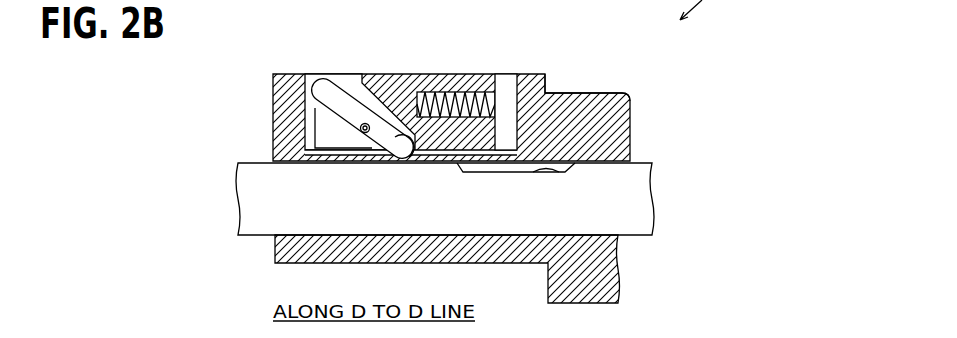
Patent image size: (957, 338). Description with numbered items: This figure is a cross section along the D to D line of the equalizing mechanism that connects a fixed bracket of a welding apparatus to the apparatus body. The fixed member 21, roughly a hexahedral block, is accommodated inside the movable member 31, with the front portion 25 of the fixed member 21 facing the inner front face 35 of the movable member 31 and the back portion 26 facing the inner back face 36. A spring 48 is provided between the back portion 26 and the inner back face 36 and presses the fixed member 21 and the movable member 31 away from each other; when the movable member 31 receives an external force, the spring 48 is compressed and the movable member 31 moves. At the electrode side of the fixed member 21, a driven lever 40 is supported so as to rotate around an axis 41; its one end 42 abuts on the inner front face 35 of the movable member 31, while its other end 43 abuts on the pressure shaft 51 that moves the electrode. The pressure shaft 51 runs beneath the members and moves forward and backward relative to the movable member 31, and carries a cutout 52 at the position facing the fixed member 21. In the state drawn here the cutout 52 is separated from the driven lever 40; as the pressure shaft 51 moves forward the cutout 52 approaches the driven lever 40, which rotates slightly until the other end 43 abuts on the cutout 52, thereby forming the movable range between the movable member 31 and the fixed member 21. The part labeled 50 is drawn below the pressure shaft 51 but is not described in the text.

The fixed member 21 is at (440, 75).
The front portion 25 is at (305, 110).
The back portion 26 is at (498, 153).
The movable member 31 is at (525, 73).
The inner front face 35 is at (307, 130).
The inner back face 36 is at (510, 157).
The driven lever 40 is at (338, 100).
The axis 41 is at (358, 107).
The one end 42 is at (307, 77).
The other end 43 is at (405, 158).
The spring 48 is at (548, 74).
The base 50 is at (595, 265).
The pressure shaft 51 is at (267, 213).
The cutout 52 is at (556, 172).